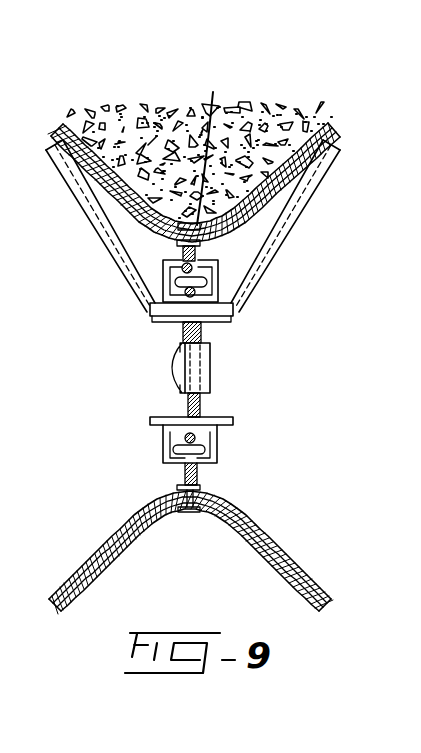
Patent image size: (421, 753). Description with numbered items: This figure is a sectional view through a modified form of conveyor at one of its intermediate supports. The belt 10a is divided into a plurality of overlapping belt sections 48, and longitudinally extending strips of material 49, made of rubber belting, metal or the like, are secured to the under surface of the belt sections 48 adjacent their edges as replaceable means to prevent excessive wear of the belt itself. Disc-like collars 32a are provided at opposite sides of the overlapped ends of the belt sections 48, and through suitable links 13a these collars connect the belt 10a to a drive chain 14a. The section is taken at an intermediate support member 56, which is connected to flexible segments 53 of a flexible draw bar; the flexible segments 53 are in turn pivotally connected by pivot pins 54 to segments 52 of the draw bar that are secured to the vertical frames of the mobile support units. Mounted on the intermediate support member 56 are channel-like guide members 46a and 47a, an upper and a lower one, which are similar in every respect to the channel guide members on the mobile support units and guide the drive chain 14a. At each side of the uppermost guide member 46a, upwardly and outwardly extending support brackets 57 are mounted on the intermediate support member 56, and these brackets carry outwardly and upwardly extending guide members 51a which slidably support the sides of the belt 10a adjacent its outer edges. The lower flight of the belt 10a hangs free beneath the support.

The belt 10a is at (336, 120).
The belt sections 48 is at (332, 127).
The strips of material 49 is at (55, 130).
The guide members 51a is at (57, 160).
The support brackets 57 is at (110, 240).
The disc-like collars 32a is at (222, 538).
The links 13a is at (196, 252).
The drive chain 14a is at (208, 282).
The channel-like guide member 46a is at (163, 285).
The channel-like guide member 47a is at (163, 449).
The intermediate support members 56 is at (237, 331).
The flexible segments 53 is at (201, 408).
The pivot pins 54 is at (170, 364).
The segments of a flexible draw bar 52 is at (188, 410).